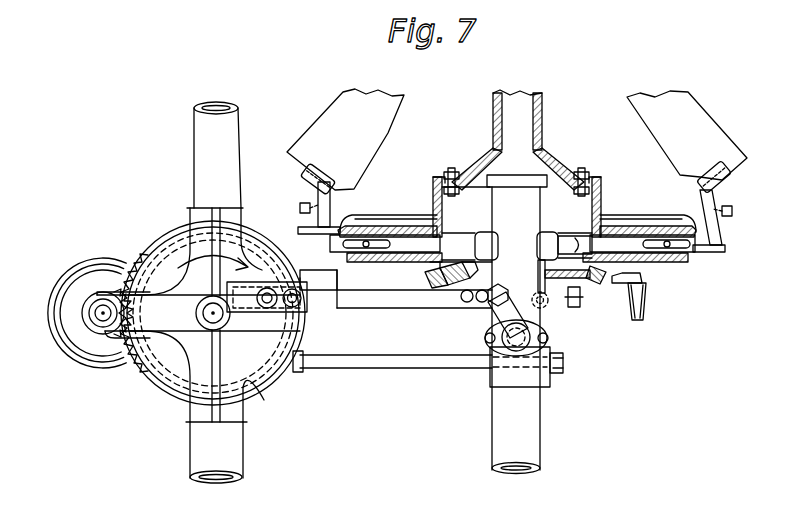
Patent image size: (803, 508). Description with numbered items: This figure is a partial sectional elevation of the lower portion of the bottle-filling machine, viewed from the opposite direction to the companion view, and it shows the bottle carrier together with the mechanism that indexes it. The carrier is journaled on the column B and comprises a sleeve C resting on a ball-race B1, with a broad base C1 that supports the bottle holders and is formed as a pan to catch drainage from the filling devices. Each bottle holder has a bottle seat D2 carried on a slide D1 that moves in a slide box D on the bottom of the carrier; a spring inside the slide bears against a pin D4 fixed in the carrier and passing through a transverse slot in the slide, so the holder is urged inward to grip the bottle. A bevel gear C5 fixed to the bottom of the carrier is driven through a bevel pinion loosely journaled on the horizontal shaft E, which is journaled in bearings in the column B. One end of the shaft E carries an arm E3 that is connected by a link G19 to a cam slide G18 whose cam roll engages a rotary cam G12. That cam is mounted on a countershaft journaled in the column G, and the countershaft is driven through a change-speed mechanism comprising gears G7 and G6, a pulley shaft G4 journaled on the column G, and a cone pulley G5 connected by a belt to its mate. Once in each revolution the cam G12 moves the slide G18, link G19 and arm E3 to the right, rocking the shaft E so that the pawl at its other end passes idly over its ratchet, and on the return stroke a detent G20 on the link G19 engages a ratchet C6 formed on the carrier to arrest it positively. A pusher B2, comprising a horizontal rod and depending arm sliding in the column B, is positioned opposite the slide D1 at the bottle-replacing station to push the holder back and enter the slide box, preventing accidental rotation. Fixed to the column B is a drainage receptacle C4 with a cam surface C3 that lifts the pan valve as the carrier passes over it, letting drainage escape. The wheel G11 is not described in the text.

The column G is at (197, 155).
The pulley shaft G4 is at (100, 320).
The cone pulley G5 is at (90, 364).
The gear G6 is at (118, 287).
The gear G7 is at (141, 368).
The internal gear wheel G11 is at (246, 368).
The rotary cam G12 is at (266, 267).
The cam slide G18 is at (269, 311).
The link G19 is at (368, 302).
The detent G20 is at (459, 270).
The sleeve C is at (541, 138).
The broad base C1 is at (383, 222).
The cam surface C3 is at (646, 280).
The drainage receptacle C4 is at (644, 307).
The bevel gear C5 is at (438, 278).
The ratchet C6 is at (590, 318).
The column B is at (541, 429).
The ball-race B1 is at (548, 180).
The pusher B2 is at (562, 243).
The slide box D is at (379, 258).
The slide D1 is at (727, 251).
The bottle seat D2 is at (334, 187).
The pin D4 is at (712, 268).
The horizontal shaft E is at (517, 348).
The arm E3 is at (502, 316).